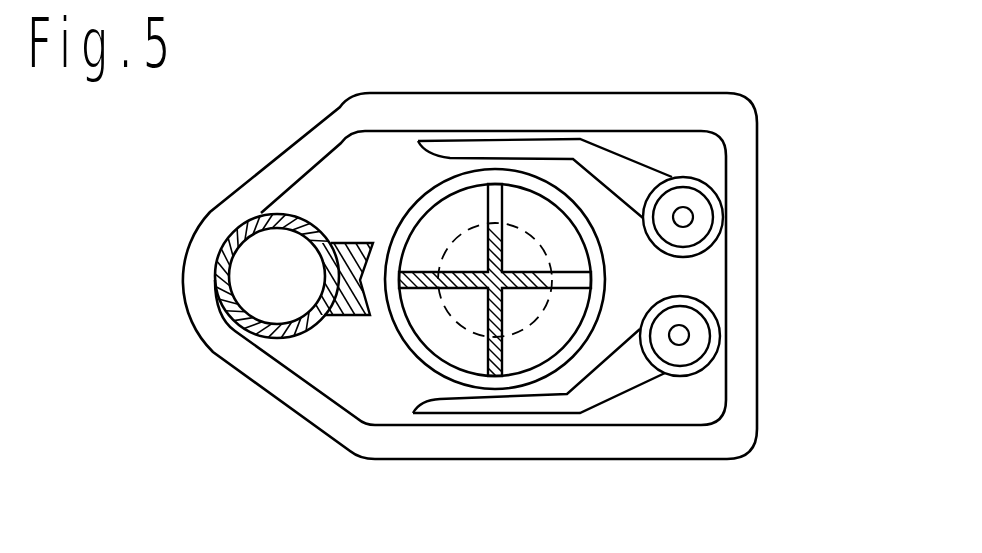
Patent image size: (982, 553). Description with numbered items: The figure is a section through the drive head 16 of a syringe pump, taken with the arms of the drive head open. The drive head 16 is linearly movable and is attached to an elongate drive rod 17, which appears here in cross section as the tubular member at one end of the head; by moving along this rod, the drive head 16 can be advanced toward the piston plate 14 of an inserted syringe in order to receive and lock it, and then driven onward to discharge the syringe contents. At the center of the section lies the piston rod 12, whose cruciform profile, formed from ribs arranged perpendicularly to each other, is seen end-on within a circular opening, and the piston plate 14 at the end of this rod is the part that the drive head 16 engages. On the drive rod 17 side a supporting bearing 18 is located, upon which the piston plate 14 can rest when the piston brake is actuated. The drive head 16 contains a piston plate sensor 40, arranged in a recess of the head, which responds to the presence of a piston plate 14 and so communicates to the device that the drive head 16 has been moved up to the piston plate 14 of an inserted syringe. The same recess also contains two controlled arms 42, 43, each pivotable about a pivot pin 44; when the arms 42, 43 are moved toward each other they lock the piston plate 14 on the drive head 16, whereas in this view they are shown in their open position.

The piston rod 12 is at (480, 355).
The piston plate 14 is at (578, 254).
The drive head 16 is at (770, 126).
The drive rod 17 is at (277, 213).
The supporting bearing 18 is at (349, 243).
The piston plate sensor 40 is at (533, 230).
The controlled arm 42 is at (499, 145).
The controlled arm 43 is at (517, 408).
The pivot pin 44 is at (683, 217).